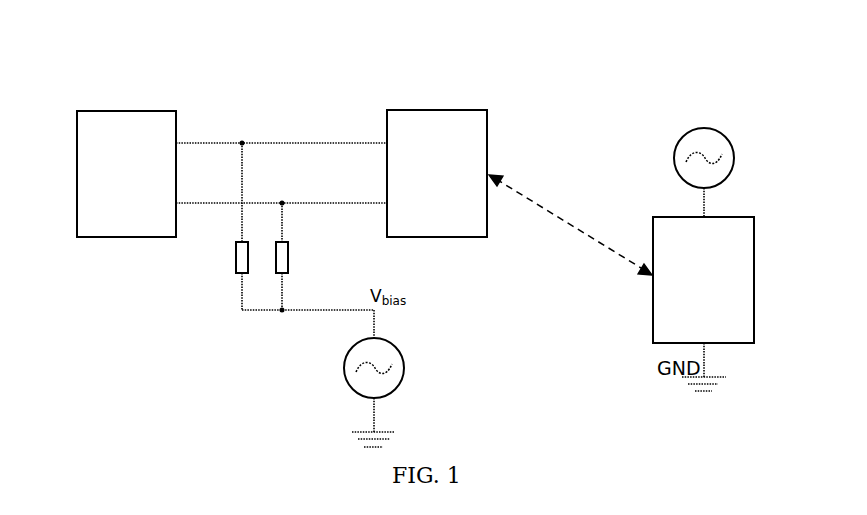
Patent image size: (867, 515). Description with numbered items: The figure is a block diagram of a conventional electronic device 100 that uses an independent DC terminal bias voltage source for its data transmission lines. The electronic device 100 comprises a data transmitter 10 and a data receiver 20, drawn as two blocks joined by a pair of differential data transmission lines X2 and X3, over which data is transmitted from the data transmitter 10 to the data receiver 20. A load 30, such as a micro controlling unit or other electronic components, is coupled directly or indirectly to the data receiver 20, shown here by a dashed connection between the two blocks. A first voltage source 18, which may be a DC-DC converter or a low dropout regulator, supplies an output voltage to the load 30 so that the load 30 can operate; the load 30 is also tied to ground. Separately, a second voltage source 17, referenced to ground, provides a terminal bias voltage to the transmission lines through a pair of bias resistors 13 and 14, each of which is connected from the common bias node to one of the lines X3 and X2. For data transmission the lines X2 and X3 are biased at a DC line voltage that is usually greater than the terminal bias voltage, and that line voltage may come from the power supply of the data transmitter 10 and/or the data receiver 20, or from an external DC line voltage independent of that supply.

The electronic device 100 is at (136, 46).
The data transmitter 10 is at (176, 111).
The data receiver 20 is at (487, 110).
The load 30 is at (754, 247).
The bias resistor 13 is at (236, 272).
The bias resistor 14 is at (288, 270).
The second voltage source 17 is at (402, 362).
The first voltage source 18 is at (734, 150).
The differential data transmission line X3 is at (282, 143).
The differential data transmission line X2 is at (292, 203).